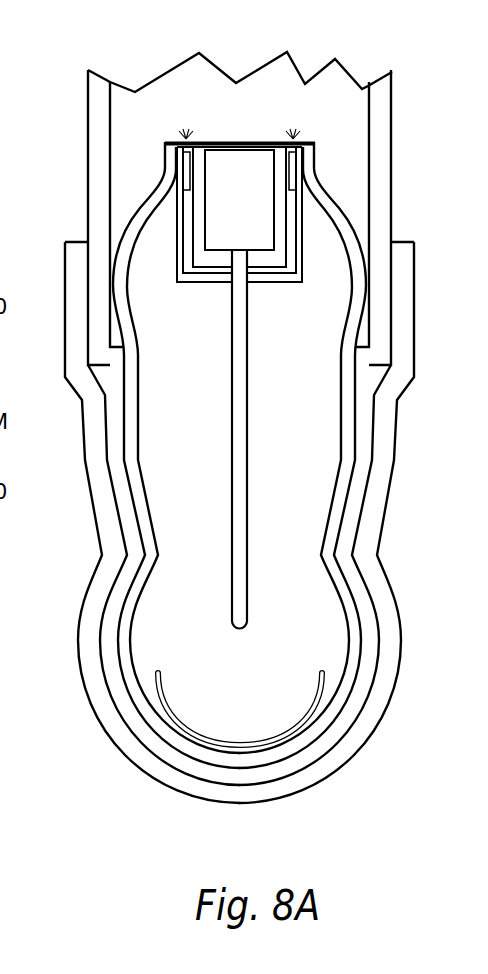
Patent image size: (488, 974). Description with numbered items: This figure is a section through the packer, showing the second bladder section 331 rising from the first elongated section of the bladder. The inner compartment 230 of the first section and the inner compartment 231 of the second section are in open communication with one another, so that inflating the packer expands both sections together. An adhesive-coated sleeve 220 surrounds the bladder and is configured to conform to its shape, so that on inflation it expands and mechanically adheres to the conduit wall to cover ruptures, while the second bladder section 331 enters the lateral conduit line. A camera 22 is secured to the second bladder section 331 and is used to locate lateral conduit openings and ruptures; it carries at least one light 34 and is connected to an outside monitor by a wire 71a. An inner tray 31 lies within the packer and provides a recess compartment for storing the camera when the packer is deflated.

The camera 22 is at (229, 163).
The light 34 is at (181, 130).
The second bladder section 331 is at (145, 200).
The inner compartment of the second section 231 is at (145, 245).
The wire 71a is at (233, 533).
The inner compartment of the first section 230 is at (150, 650).
The adhesive-coated sleeve 220 is at (117, 698).
The inner tray 31 is at (178, 728).